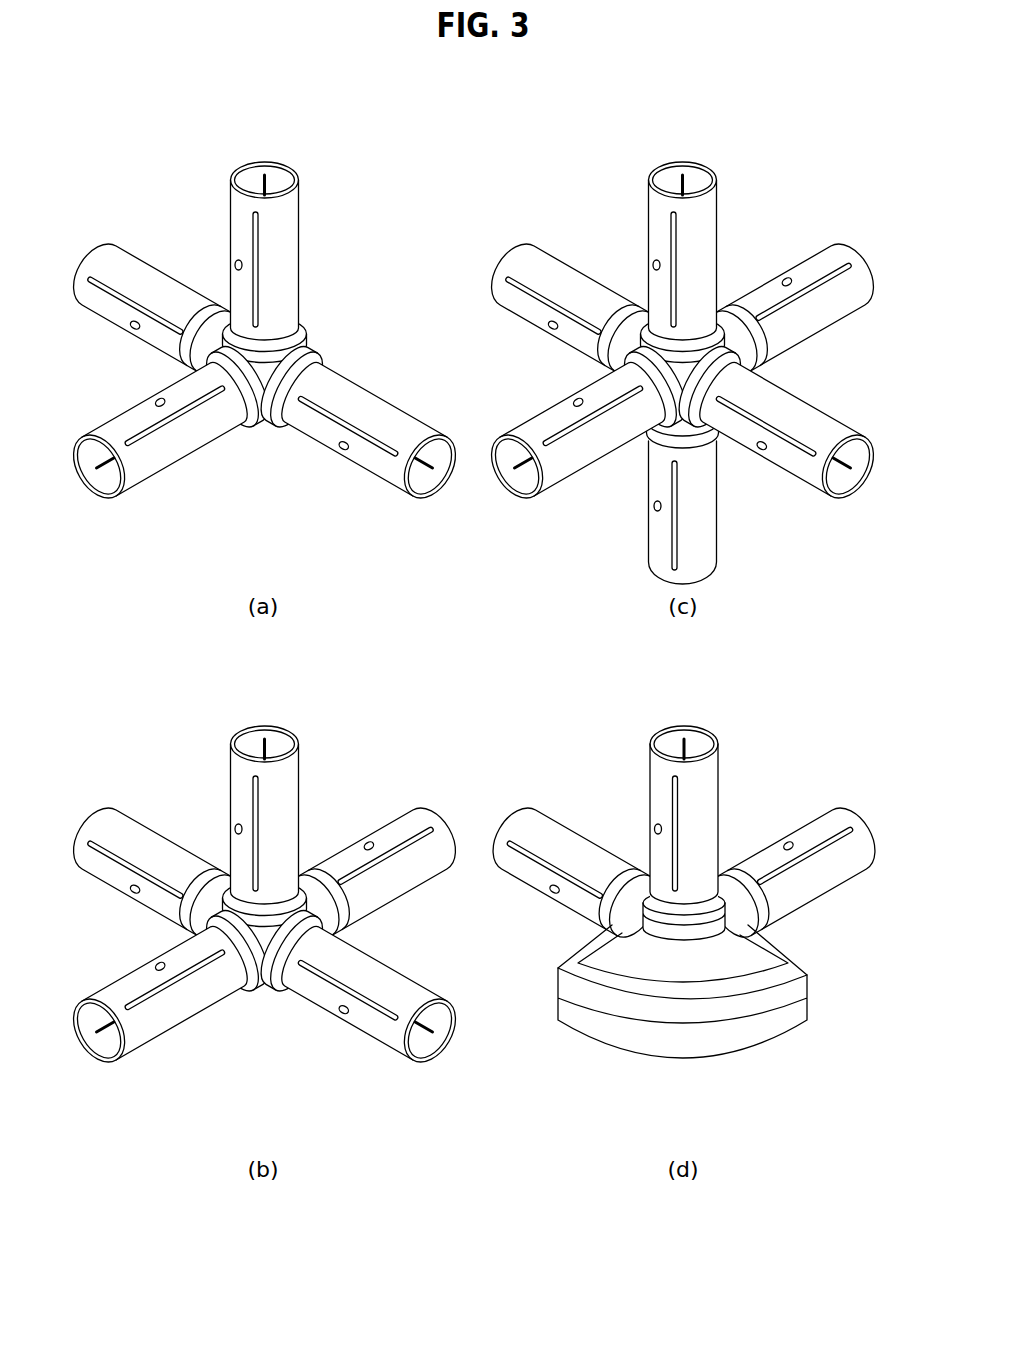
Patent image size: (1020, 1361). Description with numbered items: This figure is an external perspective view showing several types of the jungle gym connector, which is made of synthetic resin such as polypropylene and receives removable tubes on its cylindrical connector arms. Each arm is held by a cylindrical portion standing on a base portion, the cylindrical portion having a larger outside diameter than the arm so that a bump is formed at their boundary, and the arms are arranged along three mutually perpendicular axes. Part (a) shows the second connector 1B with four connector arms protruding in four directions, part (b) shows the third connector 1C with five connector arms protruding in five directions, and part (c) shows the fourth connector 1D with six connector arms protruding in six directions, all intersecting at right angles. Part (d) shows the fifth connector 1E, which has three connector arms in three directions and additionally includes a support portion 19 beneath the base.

The support portion 19 is at (650, 968).
The second connector 1B is at (264, 322).
The third connector 1C is at (264, 886).
The fourth connector 1D is at (682, 357).
The fifth connector 1E is at (684, 897).